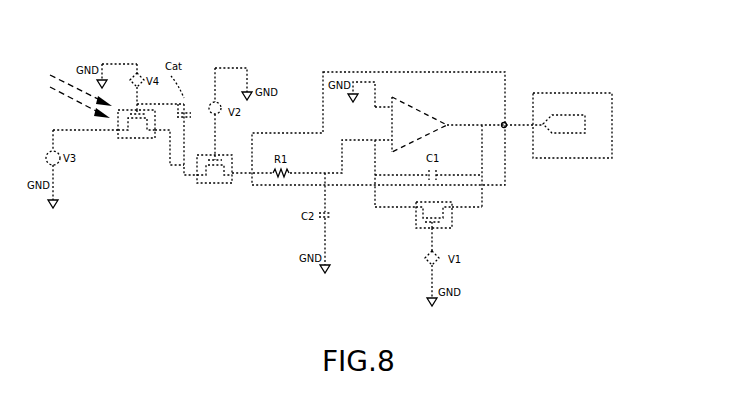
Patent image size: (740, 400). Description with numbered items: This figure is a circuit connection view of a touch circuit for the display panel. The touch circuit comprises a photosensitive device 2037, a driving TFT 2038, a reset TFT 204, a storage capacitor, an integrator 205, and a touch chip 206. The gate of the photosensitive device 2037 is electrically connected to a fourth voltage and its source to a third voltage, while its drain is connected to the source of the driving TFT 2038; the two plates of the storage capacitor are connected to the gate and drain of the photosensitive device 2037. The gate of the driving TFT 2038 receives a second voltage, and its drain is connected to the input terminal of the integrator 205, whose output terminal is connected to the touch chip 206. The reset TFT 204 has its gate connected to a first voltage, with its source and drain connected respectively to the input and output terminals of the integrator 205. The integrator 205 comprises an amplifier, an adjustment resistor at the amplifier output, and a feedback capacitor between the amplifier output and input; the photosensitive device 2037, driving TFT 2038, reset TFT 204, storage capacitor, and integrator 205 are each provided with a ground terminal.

The photosensitive device 2037 is at (130, 138).
The driving TFT 2038 is at (215, 183).
The reset TFT 204 is at (452, 224).
The integrator 205 is at (452, 72).
The touch chip 206 is at (612, 125).